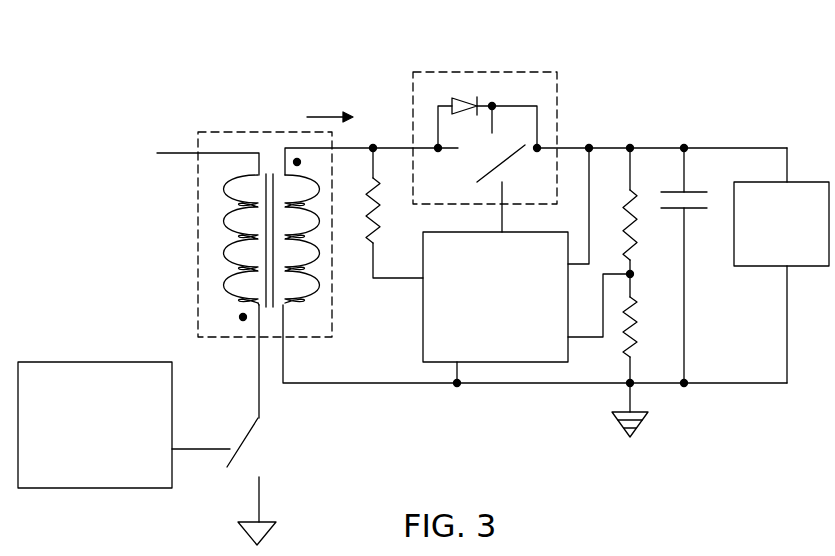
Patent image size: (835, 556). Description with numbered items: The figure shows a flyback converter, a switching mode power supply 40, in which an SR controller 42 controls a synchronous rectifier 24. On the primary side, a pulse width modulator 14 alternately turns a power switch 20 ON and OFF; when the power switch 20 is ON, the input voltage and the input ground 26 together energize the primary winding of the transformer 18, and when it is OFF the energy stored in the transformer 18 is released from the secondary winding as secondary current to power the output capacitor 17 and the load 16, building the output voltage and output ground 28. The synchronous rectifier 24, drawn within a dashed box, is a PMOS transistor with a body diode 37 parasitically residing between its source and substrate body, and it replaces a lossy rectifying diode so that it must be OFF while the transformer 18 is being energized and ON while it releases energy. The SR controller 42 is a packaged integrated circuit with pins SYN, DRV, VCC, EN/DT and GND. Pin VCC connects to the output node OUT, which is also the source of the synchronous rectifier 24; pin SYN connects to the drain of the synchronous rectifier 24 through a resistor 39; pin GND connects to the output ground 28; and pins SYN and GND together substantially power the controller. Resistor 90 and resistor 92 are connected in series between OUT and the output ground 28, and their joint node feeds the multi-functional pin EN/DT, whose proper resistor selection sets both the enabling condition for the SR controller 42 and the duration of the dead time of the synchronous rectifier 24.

The switching mode power supply 40 is at (228, 60).
The transformer 18 is at (221, 131).
The synchronous rectifier 24 is at (490, 72).
The body diode 37 is at (481, 113).
The resistor 39 is at (394, 213).
The SR controller 42 is at (506, 308).
The resistor 90 is at (644, 213).
The resistor 92 is at (644, 328).
The output capacitor 17 is at (690, 265).
The load 16 is at (794, 244).
The pulse width modulator 14 is at (107, 452).
The power switch 20 is at (265, 448).
The input ground 26 is at (248, 520).
The output ground 28 is at (617, 418).